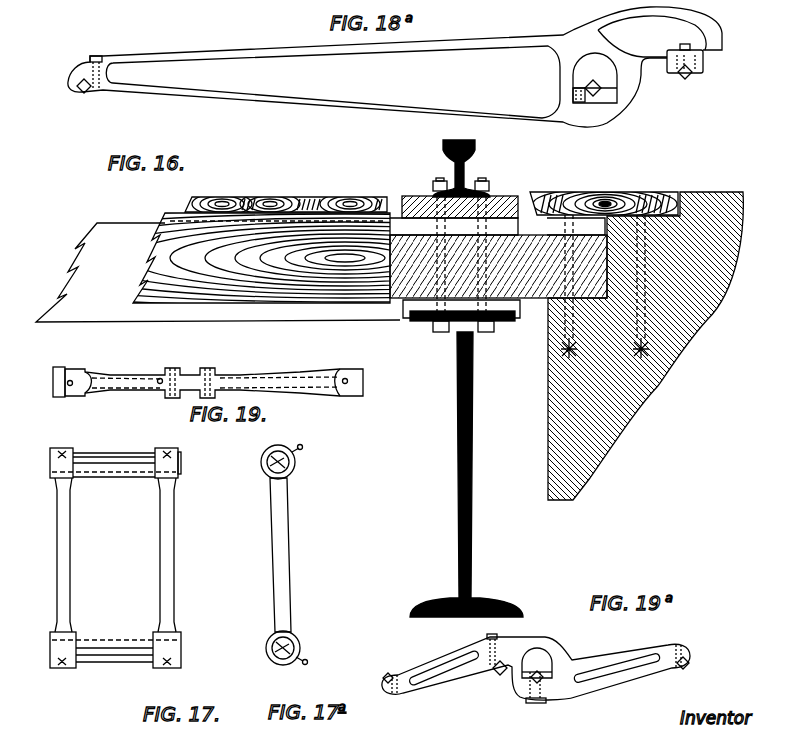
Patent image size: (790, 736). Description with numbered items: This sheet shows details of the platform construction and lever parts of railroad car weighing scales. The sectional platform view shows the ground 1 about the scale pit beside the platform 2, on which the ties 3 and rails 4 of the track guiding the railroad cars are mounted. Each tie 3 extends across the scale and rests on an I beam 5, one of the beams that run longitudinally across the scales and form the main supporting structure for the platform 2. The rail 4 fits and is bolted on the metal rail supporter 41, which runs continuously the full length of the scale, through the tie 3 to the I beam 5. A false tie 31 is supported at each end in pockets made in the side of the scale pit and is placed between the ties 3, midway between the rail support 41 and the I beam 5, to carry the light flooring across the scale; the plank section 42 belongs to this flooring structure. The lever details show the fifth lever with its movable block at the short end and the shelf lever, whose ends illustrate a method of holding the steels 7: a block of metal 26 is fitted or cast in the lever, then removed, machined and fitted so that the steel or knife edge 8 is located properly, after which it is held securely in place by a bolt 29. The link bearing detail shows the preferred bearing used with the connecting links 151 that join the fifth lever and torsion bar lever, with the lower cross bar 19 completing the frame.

In FIG. 16, the ground 1 is at (652, 390).
In FIG. 16, the platform 2 is at (268, 182).
In FIG. 16, the tie 3 is at (58, 281).
In FIG. 16, the false tie 31 is at (137, 282).
In FIG. 16, the rail 4 is at (435, 147).
In FIG. 16, the rail supporter 41 is at (411, 192).
In FIG. 16, the plank section 42 is at (440, 272).
In FIG. 16, the I beam 5 is at (455, 481).
In FIG. 17, the steel 7 is at (260, 462).
In FIG. 17A, the steel 7 is at (282, 462).
In FIG. 18A, the knife edge 8 is at (601, 88).
In FIG. 19A, the knife edge 8 is at (545, 672).
In FIG. 17, the connecting link 151 is at (264, 535).
In FIG. 17A, the connecting link 151 is at (280, 555).
In FIG. 17, the lower cross bar 19 is at (262, 646).
In FIG. 17A, the lower cross bar 19 is at (287, 648).
In FIG. 18A, the block of metal 26 is at (608, 104).
In FIG. 19A, the block of metal 26 is at (536, 668).
In FIG. 18A, the bolt 29 is at (585, 104).
In FIG. 19A, the bolt 29 is at (488, 637).